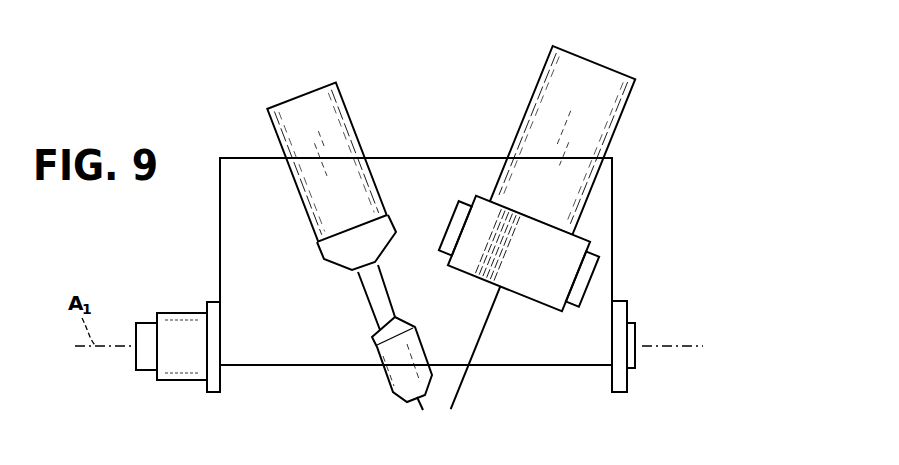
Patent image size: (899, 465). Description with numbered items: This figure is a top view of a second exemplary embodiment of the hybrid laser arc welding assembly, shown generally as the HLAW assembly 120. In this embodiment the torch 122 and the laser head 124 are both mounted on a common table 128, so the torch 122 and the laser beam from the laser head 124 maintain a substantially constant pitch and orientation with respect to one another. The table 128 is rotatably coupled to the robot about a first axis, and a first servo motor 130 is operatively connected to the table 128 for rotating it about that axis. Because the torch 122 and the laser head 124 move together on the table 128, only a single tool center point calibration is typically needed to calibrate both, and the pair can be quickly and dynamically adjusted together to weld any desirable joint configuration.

The HLAW assembly 120 is at (597, 42).
The torch 122 is at (350, 113).
The laser head 124 is at (573, 250).
The table 128 is at (418, 170).
The first servo motor 130 is at (135, 358).